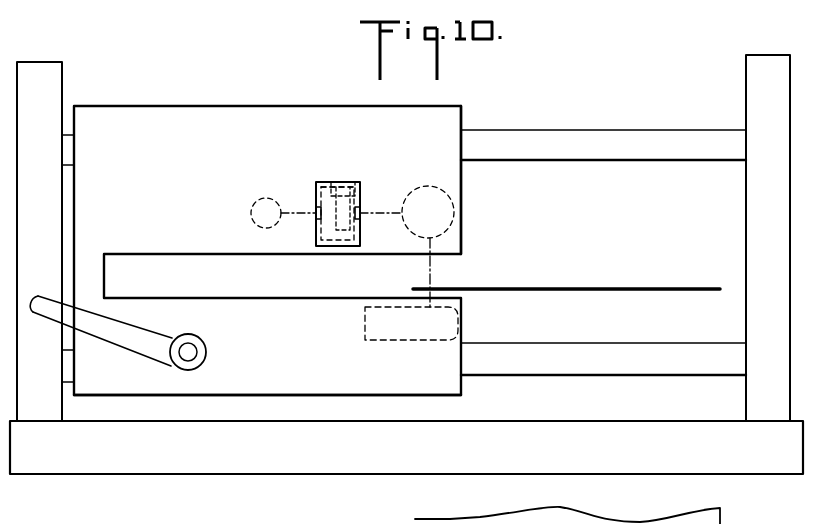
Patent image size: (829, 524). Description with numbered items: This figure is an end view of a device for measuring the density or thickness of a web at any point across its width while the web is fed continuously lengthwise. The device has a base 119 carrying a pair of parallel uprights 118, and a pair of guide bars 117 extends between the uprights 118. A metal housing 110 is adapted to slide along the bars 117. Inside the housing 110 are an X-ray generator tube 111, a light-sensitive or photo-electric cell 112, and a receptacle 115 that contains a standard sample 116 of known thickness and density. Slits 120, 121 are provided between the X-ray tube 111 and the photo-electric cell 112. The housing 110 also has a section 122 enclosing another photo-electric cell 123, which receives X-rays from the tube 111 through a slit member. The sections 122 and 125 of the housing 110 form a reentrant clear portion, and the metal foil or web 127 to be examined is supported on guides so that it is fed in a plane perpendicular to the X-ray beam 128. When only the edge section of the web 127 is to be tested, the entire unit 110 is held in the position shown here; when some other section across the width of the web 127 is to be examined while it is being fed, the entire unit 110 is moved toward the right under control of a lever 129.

The metal housing 110 is at (458, 104).
The X-ray generator tube 111 is at (456, 198).
The photo-electric cell 112 is at (258, 202).
The receptacle 115 is at (355, 185).
The standard sample 116 is at (338, 185).
The guide bars 117 is at (648, 137).
The uprights 118 is at (48, 72).
The base 119 is at (374, 464).
The slit 120 is at (362, 208).
The slit 121 is at (316, 208).
The section of housing 122 is at (358, 394).
The photo-electric cell 123 is at (462, 320).
The section of housing 125 is at (174, 126).
The metal foil or web 127 is at (705, 263).
The X-ray beam 128 is at (432, 265).
The lever 129 is at (108, 330).